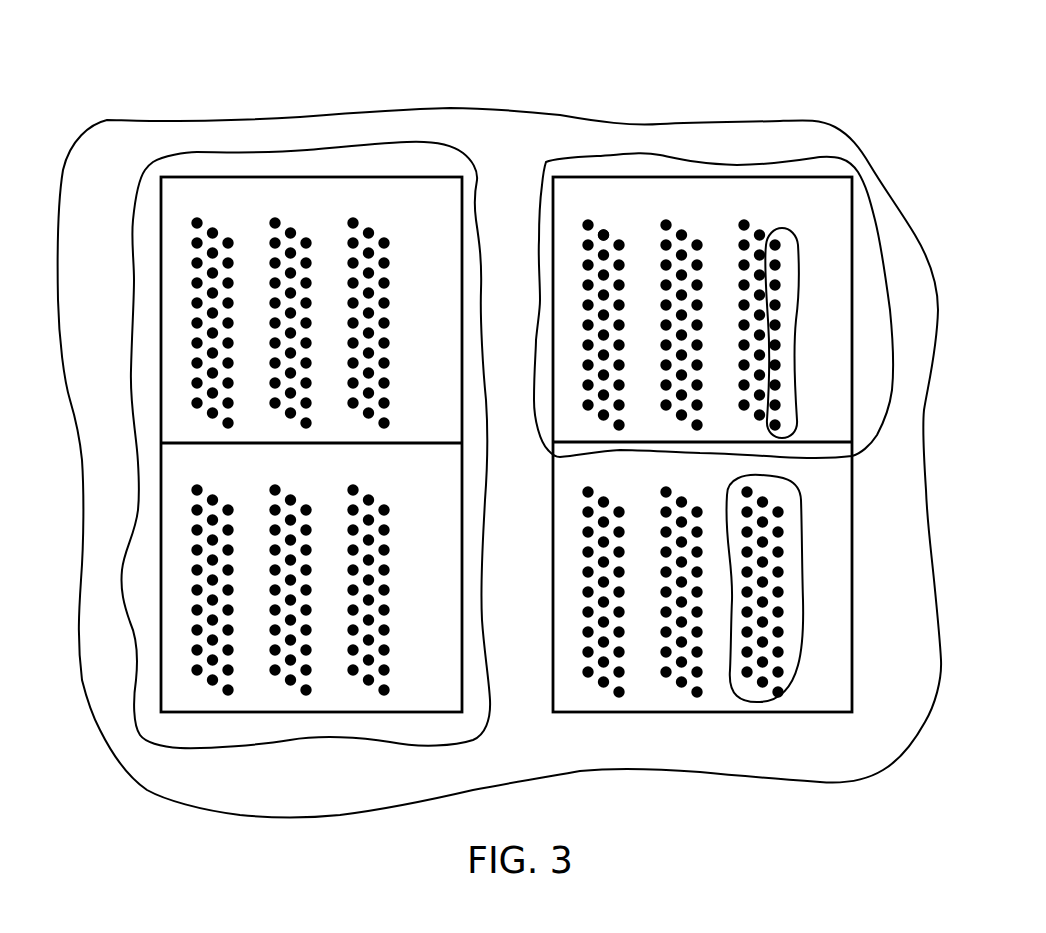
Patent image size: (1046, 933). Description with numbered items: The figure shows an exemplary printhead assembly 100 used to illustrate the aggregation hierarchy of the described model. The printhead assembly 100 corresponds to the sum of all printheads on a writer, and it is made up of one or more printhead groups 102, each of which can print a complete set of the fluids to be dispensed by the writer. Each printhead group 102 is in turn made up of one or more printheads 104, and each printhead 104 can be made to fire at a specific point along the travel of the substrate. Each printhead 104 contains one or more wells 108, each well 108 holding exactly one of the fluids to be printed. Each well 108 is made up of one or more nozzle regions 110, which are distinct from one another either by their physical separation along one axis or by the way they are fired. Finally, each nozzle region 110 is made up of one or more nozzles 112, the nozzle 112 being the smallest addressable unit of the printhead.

The printhead assembly 100 is at (806, 121).
The printhead group 102 is at (136, 257).
The printhead 104 is at (540, 303).
The well 108 is at (803, 558).
The nozzle region 110 is at (793, 292).
The nozzle 112 is at (604, 228).